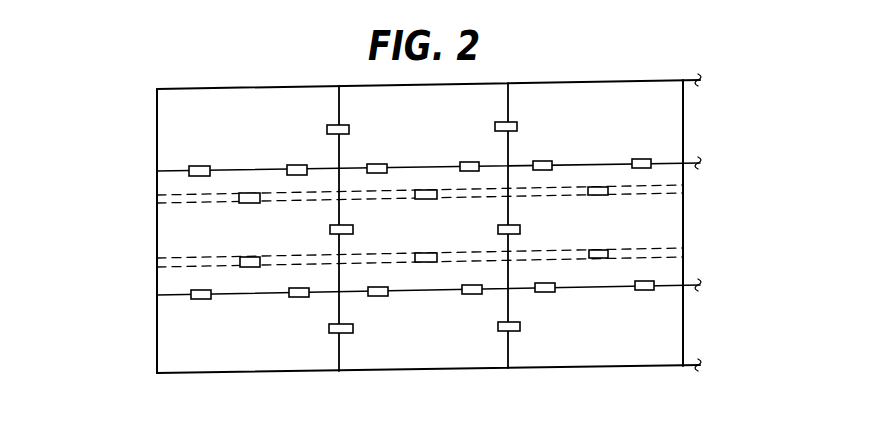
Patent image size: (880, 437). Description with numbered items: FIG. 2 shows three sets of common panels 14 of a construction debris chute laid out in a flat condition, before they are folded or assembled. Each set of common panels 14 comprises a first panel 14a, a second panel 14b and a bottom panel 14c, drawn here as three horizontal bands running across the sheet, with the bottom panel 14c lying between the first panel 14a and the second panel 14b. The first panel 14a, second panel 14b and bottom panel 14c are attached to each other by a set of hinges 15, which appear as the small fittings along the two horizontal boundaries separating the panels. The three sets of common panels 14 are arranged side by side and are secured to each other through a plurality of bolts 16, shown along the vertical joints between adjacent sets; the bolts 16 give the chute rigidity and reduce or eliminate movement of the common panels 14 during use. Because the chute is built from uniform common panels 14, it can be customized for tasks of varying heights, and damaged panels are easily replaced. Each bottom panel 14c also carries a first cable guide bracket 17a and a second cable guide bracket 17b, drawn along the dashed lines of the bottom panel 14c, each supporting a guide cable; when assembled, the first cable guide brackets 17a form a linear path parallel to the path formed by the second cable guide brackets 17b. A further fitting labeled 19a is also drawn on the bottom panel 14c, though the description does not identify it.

The common panels 14 is at (700, 58).
The first panel 14a is at (683, 123).
The second panel 14b is at (683, 325).
The bottom panel 14c is at (683, 213).
The hinges 15 is at (293, 165).
The bolts 16 is at (350, 128).
The first cable guide bracket 17a is at (250, 203).
The second cable guide bracket 17b is at (250, 257).
The fastener element 19a is at (596, 195).